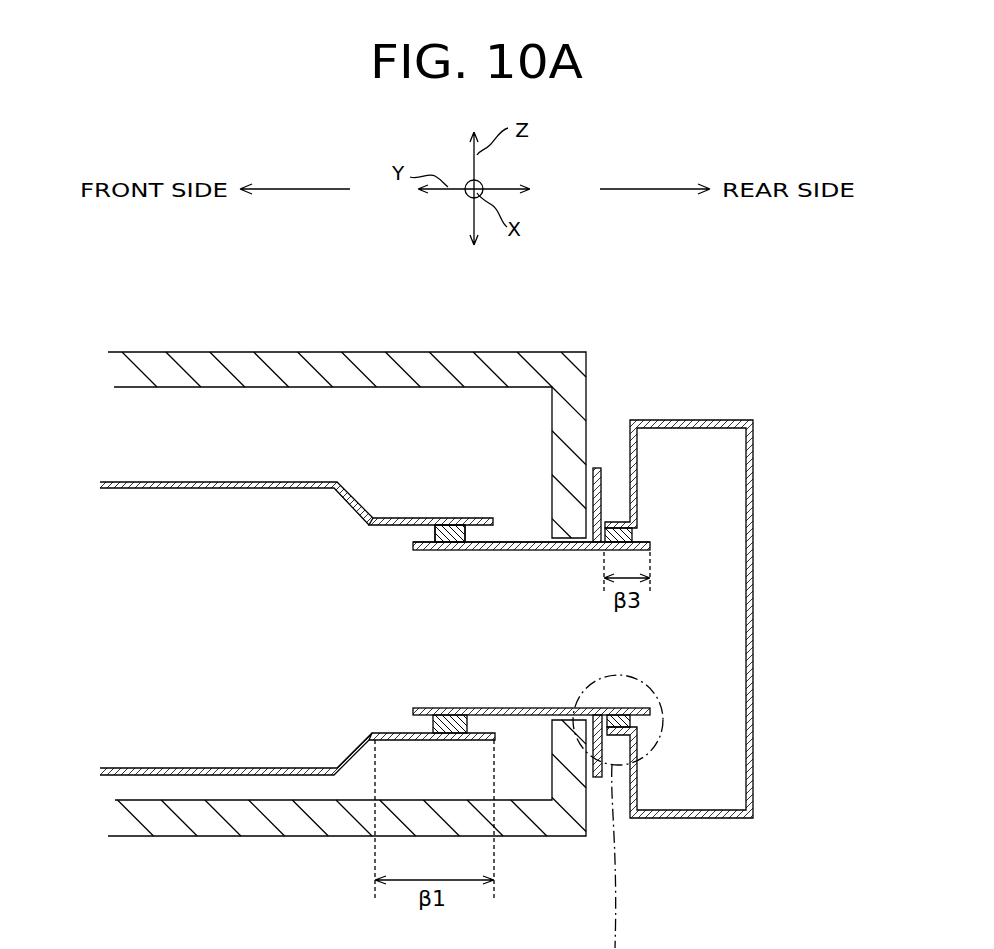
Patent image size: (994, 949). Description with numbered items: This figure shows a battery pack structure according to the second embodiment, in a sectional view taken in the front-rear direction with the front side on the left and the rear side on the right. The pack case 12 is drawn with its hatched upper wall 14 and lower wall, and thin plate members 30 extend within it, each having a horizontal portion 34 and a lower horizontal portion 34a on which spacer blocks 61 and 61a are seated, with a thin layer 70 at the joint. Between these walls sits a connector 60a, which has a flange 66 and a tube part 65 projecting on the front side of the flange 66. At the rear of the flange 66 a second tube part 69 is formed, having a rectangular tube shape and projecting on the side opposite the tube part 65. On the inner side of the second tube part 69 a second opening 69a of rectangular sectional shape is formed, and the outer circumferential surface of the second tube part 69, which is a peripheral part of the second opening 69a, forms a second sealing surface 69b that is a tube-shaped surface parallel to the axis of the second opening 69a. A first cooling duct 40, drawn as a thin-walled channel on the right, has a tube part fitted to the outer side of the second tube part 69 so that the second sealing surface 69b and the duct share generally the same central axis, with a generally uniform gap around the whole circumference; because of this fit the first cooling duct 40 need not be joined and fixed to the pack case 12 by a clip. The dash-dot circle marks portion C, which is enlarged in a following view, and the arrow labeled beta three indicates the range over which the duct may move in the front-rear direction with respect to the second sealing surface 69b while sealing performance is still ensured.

The pack case 12 is at (347, 558).
The upper wall 14 is at (428, 368).
The plate member 30 is at (185, 500).
The horizontal portion of plate 34 is at (415, 518).
The horizontal portion of lower plate 34a is at (485, 733).
The first cooling duct 40 is at (765, 457).
The connector 60a is at (526, 530).
The spacer 61 is at (430, 549).
The lower spacer 61a is at (425, 722).
The tube part 65 is at (510, 550).
The flange 66 is at (600, 478).
The second tube part 69 is at (669, 631).
The second opening 69a is at (652, 546).
The second sealing surface 69b is at (640, 718).
The adhesive layer 70 is at (430, 532).
The portion C is at (655, 748).